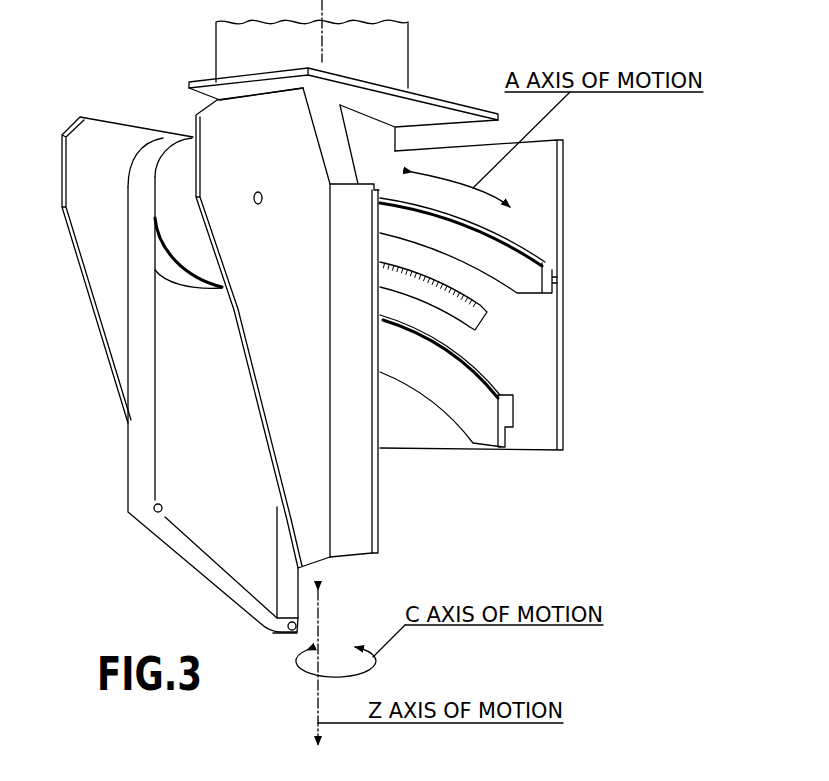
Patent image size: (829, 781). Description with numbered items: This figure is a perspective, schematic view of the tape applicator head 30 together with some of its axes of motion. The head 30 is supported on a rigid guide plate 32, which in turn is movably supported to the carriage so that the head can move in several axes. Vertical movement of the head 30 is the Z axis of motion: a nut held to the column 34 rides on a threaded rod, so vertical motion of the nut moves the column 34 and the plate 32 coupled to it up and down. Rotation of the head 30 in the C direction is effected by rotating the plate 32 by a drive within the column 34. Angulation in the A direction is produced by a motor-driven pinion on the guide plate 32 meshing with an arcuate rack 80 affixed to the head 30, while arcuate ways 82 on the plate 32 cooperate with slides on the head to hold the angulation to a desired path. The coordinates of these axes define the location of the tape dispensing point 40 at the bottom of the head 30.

The tape applicator head 30 is at (476, 513).
The guide plate 32 is at (562, 200).
The column 34 is at (393, 40).
The tape dispensing point 40 is at (273, 635).
The arcuate rack 80 is at (483, 322).
The arcuate ways 82 is at (540, 260).